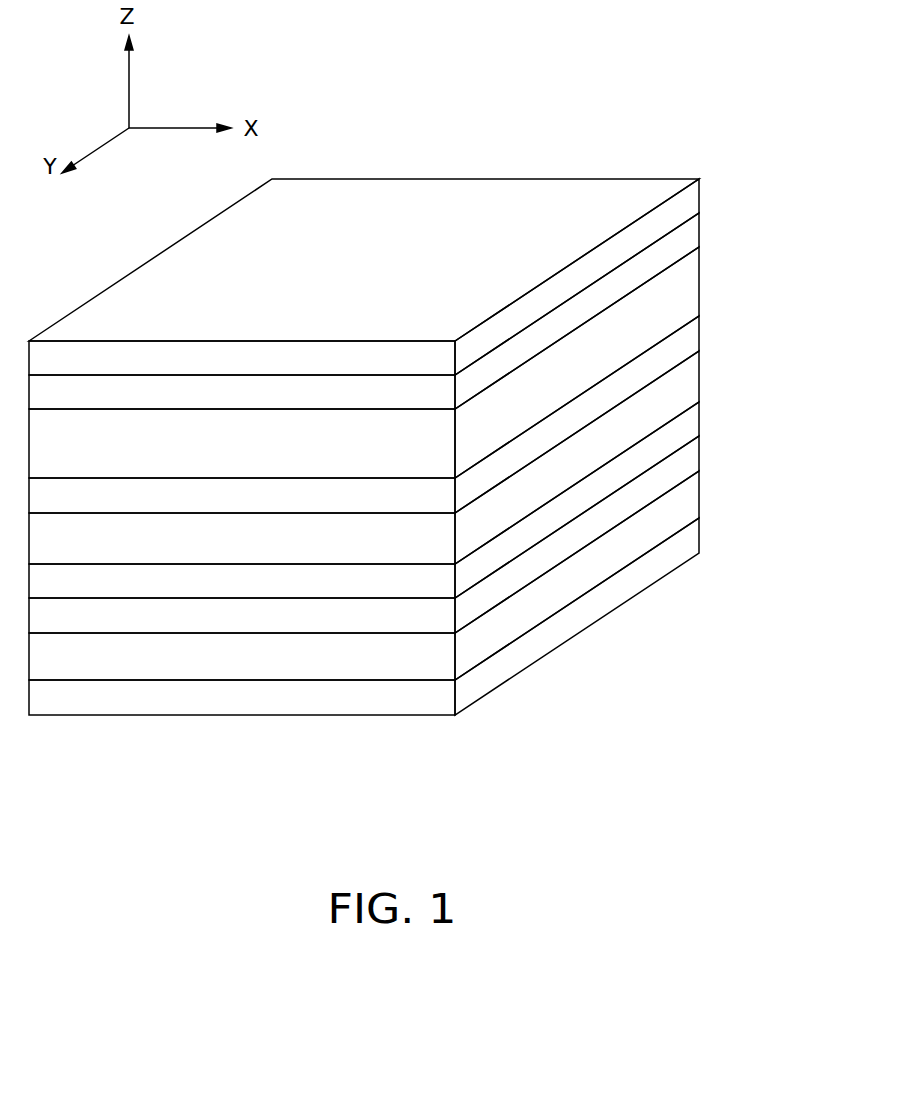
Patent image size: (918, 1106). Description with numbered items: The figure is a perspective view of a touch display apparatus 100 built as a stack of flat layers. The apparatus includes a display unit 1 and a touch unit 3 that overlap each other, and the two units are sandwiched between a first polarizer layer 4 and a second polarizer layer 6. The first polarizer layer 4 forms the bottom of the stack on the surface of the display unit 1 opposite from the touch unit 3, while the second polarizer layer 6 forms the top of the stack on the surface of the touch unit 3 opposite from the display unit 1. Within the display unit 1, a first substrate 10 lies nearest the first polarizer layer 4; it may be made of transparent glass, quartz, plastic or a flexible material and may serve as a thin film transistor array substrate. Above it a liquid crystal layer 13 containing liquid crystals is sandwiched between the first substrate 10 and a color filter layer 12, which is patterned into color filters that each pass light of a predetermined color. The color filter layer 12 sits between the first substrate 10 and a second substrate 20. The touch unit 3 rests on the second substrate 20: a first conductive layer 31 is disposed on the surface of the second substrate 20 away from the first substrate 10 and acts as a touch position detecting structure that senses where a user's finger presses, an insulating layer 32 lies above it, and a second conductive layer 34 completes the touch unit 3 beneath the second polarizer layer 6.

The touch display apparatus 100 is at (419, 27).
The second polarizer layer 6 is at (690, 202).
The touch unit 3 is at (423, 362).
The second conductive layer 34 is at (688, 238).
The insulating layer 32 is at (685, 297).
The first conductive layer 31 is at (402, 414).
The display unit 1 is at (417, 515).
The second substrate 20 is at (677, 385).
The color filter layer 12 is at (688, 427).
The liquid crystal layer 13 is at (686, 465).
The first substrate 10 is at (397, 575).
The first polarizer layer 4 is at (690, 540).